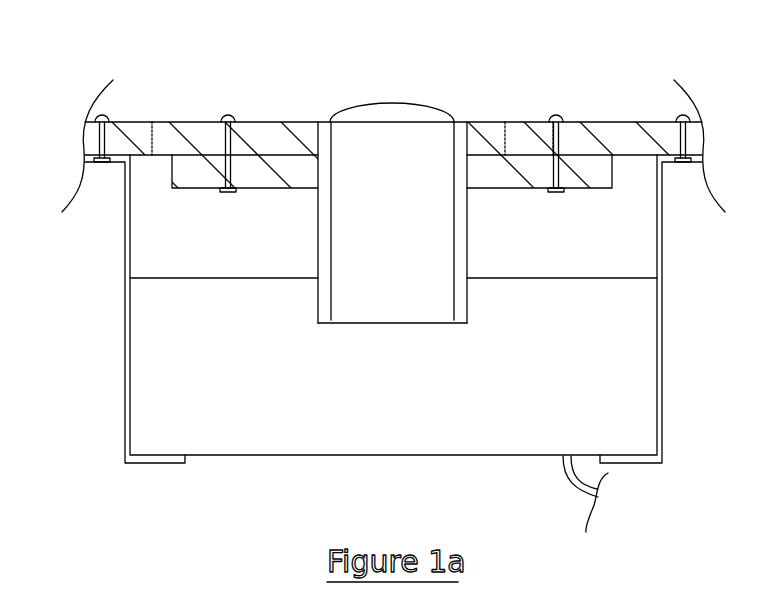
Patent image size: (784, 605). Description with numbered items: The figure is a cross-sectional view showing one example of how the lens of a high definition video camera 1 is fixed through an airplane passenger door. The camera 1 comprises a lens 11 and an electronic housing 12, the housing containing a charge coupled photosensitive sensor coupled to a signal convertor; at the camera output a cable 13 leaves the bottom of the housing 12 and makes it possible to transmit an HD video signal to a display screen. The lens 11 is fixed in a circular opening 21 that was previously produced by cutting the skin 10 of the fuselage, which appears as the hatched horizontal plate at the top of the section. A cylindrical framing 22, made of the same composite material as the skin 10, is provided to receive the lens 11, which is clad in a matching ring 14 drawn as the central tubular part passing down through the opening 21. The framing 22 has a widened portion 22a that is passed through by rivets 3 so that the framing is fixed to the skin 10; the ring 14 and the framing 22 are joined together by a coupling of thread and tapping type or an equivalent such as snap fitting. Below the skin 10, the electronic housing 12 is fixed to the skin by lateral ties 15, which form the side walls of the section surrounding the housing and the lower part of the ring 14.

The HD video camera 1 is at (299, 462).
The rivets 3 is at (106, 118).
The skin of the fuselage 10 is at (620, 122).
The lens 11 is at (391, 246).
The electronic housing 12 is at (240, 277).
The cable 13 is at (572, 492).
The matching ring 14 is at (460, 242).
The lateral ties 15 is at (124, 385).
The circular opening 21 is at (403, 95).
The cylindrical framing 22 is at (300, 122).
The widened portion 22a is at (590, 190).